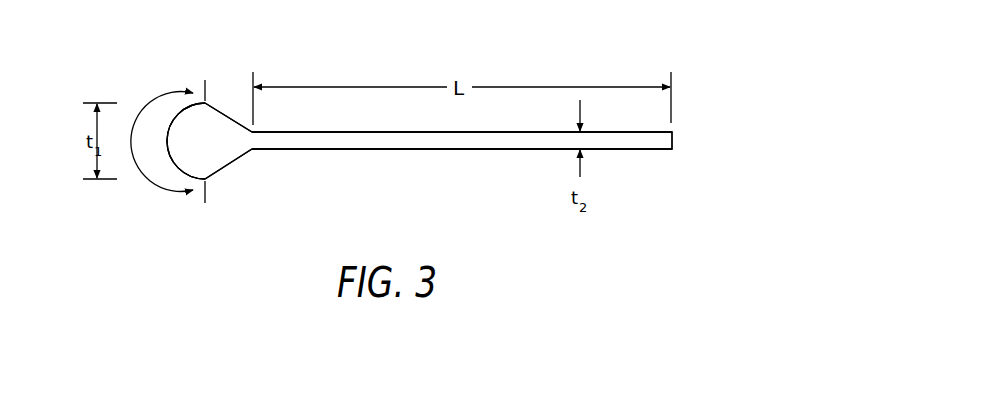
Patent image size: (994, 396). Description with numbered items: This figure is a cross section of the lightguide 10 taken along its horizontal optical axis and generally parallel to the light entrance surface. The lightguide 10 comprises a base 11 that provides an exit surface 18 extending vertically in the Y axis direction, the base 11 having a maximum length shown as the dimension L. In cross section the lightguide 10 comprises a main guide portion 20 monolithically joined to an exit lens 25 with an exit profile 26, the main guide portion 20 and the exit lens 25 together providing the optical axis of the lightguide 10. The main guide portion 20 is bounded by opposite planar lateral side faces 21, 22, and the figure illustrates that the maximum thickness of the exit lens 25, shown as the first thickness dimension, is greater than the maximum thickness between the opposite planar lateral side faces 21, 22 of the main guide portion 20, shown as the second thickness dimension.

The lightguide 10 is at (348, 108).
The base 11 is at (270, 130).
The exit surface 18 is at (170, 177).
The main guide portion 20 is at (492, 138).
The planar lateral side face 21 is at (400, 132).
The planar lateral side face 22 is at (497, 150).
The exit lens 25 is at (207, 133).
The exit profile 26 is at (162, 106).